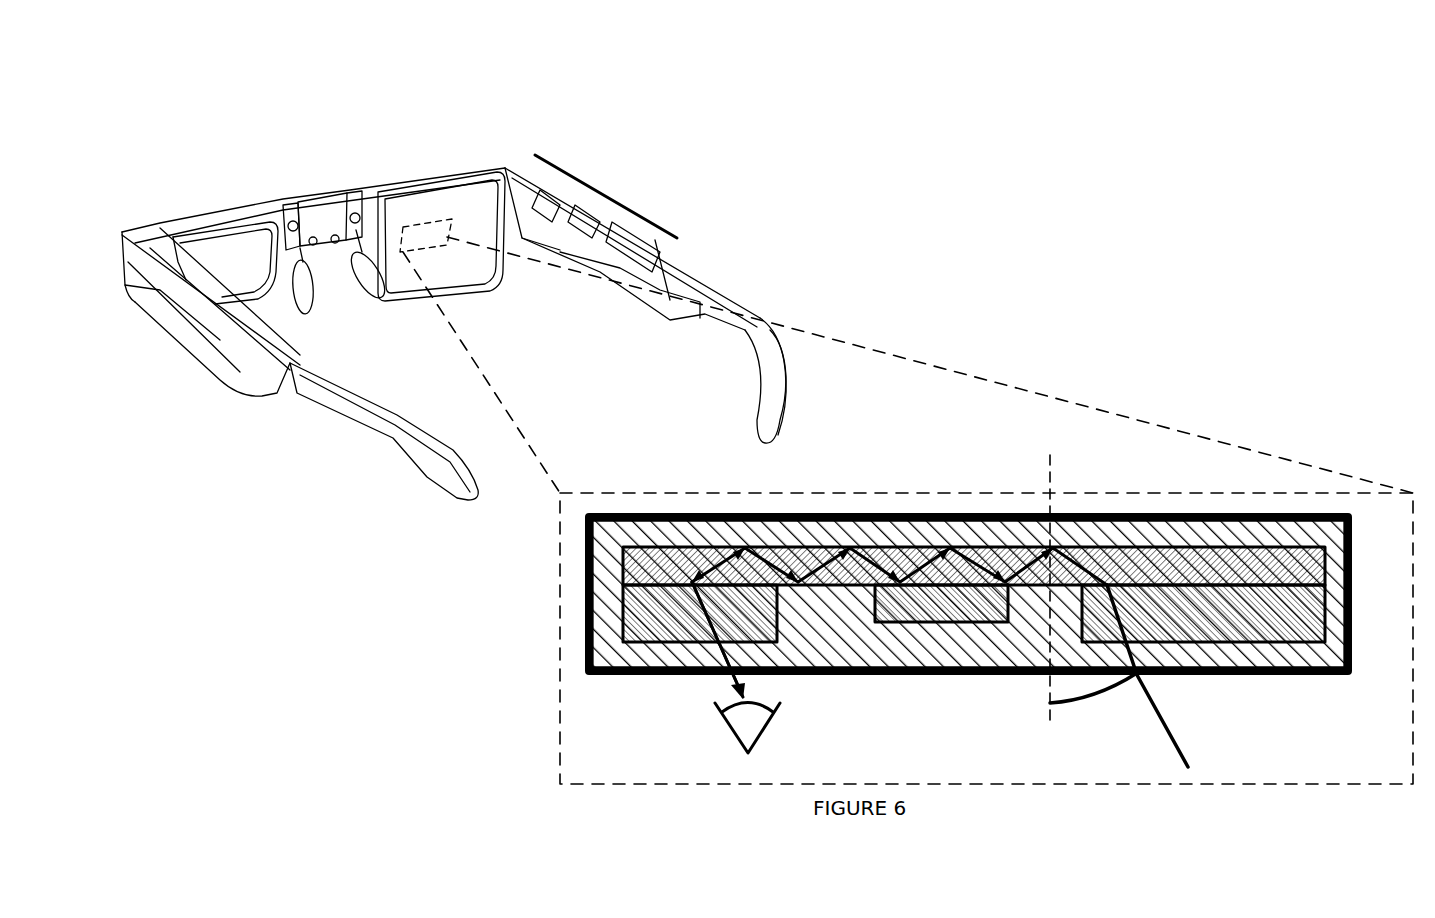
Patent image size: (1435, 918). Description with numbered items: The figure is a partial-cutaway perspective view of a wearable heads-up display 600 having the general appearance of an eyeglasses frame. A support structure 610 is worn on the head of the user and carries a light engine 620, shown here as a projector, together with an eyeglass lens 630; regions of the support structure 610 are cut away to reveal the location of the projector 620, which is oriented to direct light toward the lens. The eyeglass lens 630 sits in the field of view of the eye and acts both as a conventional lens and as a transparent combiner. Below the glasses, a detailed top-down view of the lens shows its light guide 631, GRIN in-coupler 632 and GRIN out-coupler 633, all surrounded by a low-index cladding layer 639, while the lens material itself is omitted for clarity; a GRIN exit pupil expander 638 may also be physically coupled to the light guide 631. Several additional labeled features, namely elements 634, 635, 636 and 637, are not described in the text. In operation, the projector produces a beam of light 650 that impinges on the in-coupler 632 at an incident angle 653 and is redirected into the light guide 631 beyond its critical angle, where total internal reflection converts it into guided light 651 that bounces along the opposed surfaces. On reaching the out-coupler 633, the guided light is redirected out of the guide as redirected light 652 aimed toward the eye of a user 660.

The wearable heads-up display 600 is at (245, 150).
The support structure 610 is at (197, 352).
The light engine 620 is at (645, 299).
The eyeglass lens 630 is at (428, 283).
The light guide 631 is at (640, 563).
The GRIN in-coupler 632 is at (1330, 603).
The GRIN out-coupler 633 is at (637, 607).
The upper lens layer 634 is at (1223, 600).
The waveguide 635 is at (668, 552).
The in-coupling region 636 is at (1223, 620).
The out-coupled light ray 637 is at (682, 645).
The GRIN exit pupil expander 638 is at (922, 600).
The cladding layer 639 is at (1298, 513).
The beam of light 650 is at (1175, 727).
The guided light 651 is at (1012, 547).
The redirected light 652 is at (747, 685).
The incident angle 653 is at (1133, 680).
The eye of a user 660 is at (733, 732).